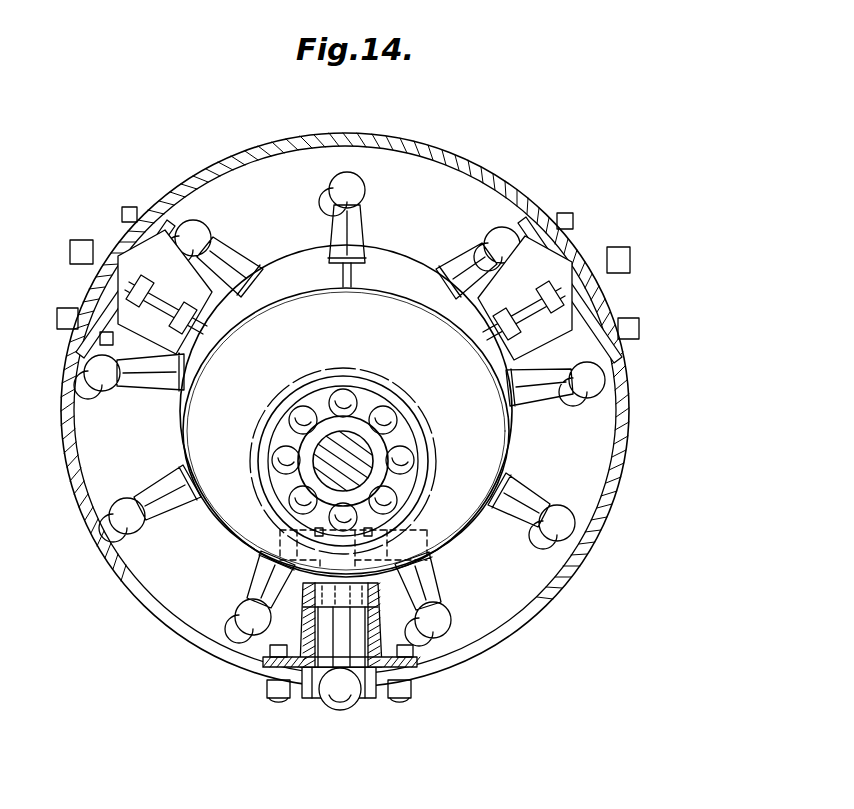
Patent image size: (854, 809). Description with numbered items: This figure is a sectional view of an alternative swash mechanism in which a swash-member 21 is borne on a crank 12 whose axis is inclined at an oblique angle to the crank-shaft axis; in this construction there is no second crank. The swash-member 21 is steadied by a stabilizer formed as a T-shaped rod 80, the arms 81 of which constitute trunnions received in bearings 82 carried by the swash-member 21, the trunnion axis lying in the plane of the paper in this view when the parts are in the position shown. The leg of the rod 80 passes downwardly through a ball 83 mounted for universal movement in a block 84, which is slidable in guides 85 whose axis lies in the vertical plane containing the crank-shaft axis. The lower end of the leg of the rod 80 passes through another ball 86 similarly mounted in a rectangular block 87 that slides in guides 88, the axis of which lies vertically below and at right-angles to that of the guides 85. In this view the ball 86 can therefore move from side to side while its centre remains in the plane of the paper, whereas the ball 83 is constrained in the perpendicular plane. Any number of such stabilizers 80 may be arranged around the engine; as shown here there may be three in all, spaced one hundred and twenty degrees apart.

The crank 12 is at (318, 446).
The swash-member 21 is at (382, 312).
The T-shaped rod 80 is at (81, 245).
The arms 81 is at (287, 531).
The bearings 82 is at (410, 541).
The ball 83 is at (332, 610).
The block 84 is at (335, 607).
The guides 85 is at (375, 582).
The ball 86 is at (331, 706).
The rectangular block 87 is at (363, 700).
The guides 88 is at (313, 690).